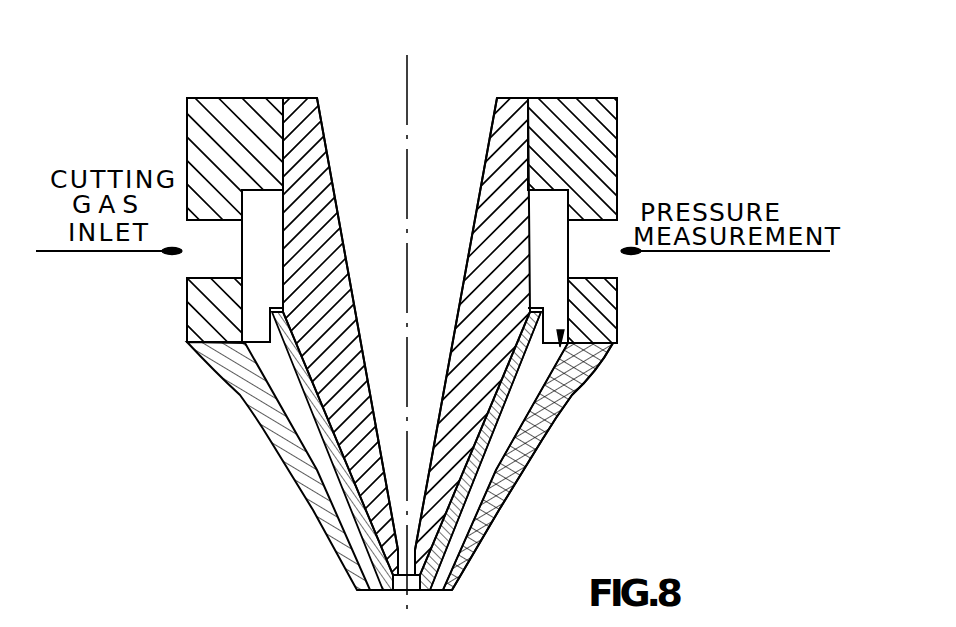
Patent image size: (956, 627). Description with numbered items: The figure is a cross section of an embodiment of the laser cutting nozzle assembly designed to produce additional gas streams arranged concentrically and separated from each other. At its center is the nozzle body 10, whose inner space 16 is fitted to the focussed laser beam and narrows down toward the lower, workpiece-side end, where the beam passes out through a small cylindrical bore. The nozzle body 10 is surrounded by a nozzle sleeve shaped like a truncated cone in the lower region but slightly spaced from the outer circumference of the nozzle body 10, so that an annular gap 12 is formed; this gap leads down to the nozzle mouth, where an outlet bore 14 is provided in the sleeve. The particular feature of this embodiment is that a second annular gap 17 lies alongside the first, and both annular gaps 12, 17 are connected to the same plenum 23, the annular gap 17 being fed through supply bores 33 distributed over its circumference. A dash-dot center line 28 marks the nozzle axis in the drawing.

The nozzle body 10 is at (515, 120).
The annular gap 12 is at (462, 550).
The outlet bore 14 is at (403, 590).
The inner space 16 is at (447, 140).
The annular gap 17 is at (500, 443).
The plenum 23 is at (563, 192).
The nozzle axis 28 is at (406, 77).
The supply bores 33 is at (562, 345).